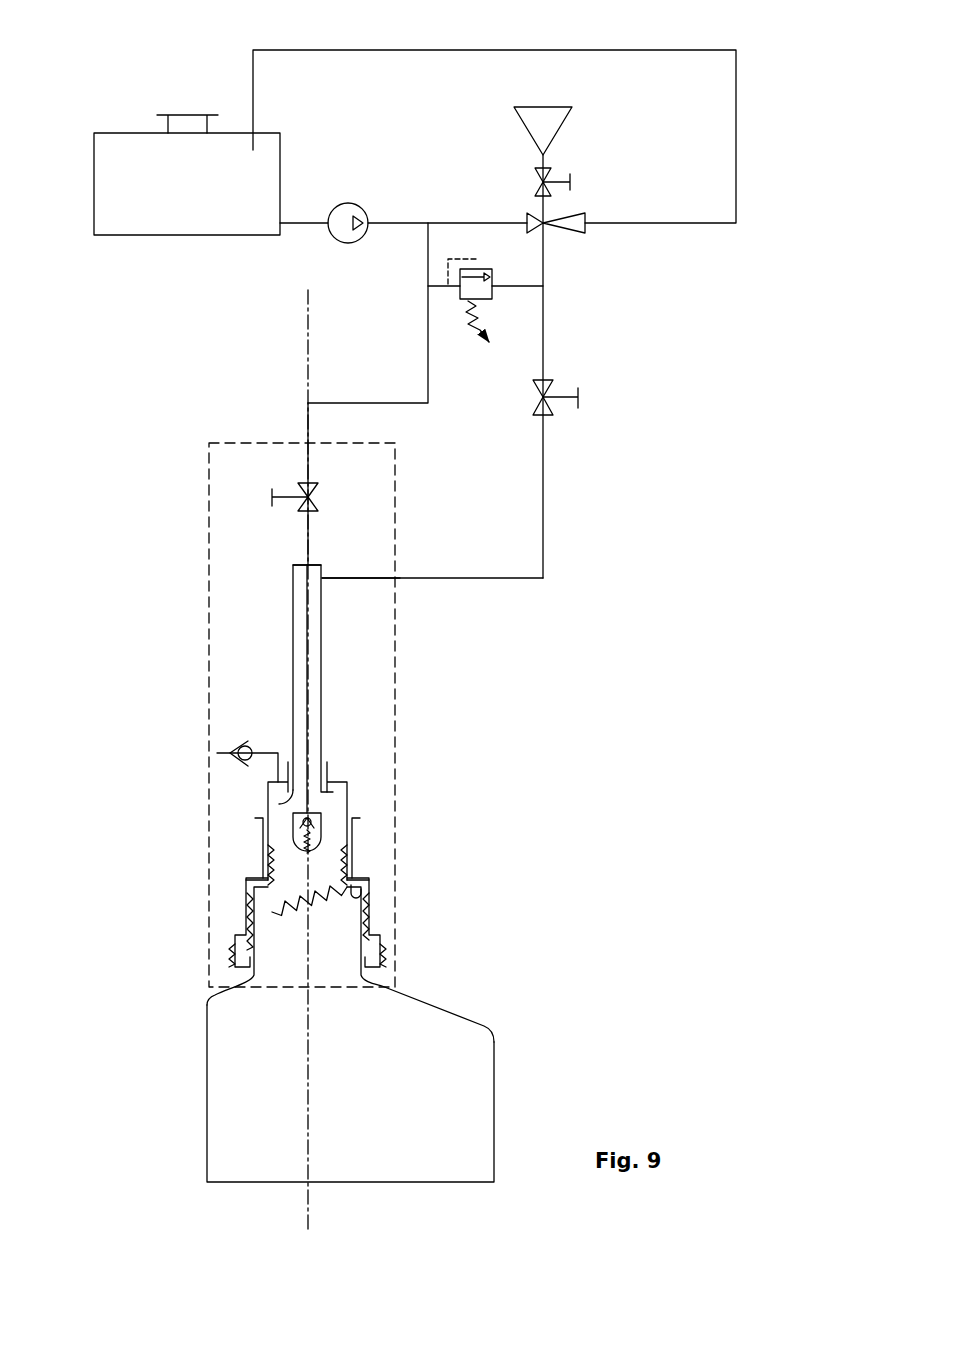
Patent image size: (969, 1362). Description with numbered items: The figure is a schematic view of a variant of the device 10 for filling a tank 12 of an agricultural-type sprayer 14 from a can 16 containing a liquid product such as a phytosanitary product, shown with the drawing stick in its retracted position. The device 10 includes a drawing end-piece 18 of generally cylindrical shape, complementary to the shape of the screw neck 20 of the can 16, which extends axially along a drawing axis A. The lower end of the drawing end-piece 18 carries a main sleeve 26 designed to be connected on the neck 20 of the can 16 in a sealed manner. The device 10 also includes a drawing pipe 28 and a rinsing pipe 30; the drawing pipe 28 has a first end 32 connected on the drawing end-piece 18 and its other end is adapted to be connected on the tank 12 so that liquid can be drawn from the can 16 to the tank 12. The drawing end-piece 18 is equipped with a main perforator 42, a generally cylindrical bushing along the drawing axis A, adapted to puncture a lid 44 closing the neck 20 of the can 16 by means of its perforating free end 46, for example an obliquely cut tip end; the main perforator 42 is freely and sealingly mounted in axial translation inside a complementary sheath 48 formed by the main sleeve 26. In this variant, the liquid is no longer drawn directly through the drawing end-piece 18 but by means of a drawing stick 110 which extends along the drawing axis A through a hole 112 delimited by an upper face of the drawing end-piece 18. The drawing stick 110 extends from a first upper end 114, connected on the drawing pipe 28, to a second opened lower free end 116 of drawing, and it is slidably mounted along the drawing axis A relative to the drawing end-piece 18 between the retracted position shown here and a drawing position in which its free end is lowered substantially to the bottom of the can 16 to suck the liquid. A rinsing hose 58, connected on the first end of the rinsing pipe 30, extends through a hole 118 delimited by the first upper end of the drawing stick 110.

The device 10 is at (620, 520).
The tank 12 is at (198, 100).
The agricultural-type sprayer 14 is at (114, 112).
The can 16 is at (487, 1004).
The drawing end-piece 18 is at (230, 885).
The screw neck 20 is at (247, 893).
The main sleeve 26 is at (237, 922).
The drawing pipe 28 is at (487, 584).
The rinsing pipe 30 is at (336, 386).
The first end 32 is at (343, 578).
The main perforator 42 is at (360, 834).
The lid 44 is at (364, 905).
The perforating free end 46 is at (322, 898).
The sheath 48 is at (350, 856).
The rinsing hose 58 is at (300, 637).
The drawing stick 110 is at (340, 727).
The hole 112 is at (329, 768).
The first upper end 114 is at (312, 565).
The second opened lower free end 116 is at (280, 803).
The hole 118 is at (307, 566).
The drawing axis A is at (307, 300).